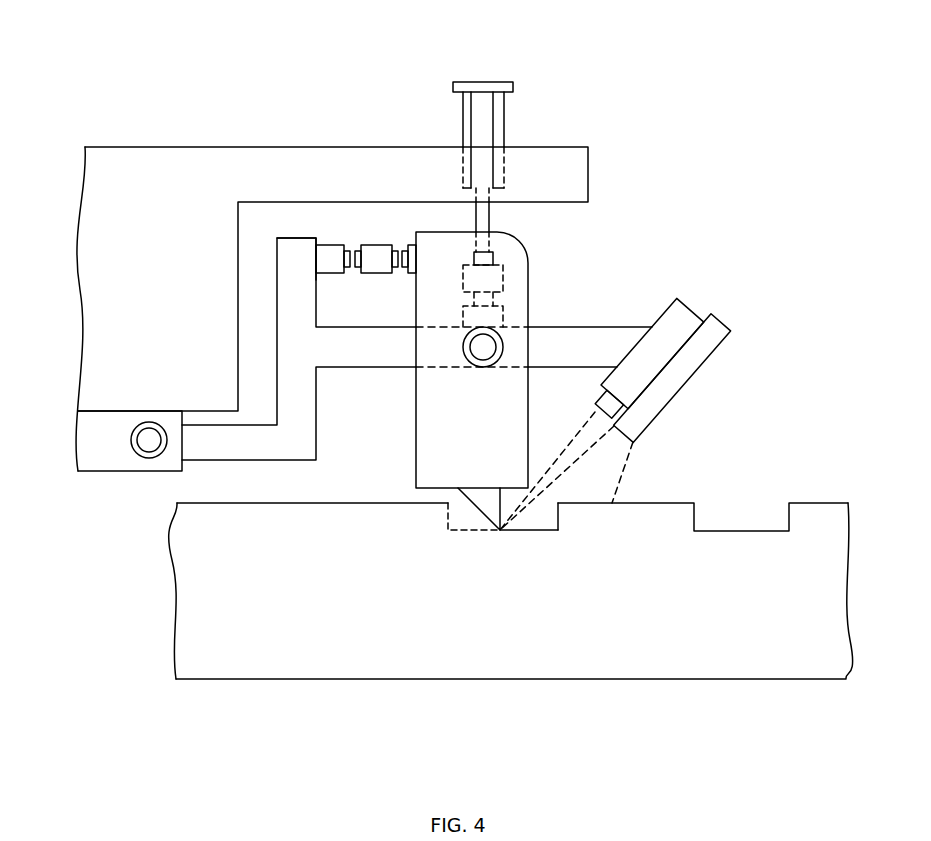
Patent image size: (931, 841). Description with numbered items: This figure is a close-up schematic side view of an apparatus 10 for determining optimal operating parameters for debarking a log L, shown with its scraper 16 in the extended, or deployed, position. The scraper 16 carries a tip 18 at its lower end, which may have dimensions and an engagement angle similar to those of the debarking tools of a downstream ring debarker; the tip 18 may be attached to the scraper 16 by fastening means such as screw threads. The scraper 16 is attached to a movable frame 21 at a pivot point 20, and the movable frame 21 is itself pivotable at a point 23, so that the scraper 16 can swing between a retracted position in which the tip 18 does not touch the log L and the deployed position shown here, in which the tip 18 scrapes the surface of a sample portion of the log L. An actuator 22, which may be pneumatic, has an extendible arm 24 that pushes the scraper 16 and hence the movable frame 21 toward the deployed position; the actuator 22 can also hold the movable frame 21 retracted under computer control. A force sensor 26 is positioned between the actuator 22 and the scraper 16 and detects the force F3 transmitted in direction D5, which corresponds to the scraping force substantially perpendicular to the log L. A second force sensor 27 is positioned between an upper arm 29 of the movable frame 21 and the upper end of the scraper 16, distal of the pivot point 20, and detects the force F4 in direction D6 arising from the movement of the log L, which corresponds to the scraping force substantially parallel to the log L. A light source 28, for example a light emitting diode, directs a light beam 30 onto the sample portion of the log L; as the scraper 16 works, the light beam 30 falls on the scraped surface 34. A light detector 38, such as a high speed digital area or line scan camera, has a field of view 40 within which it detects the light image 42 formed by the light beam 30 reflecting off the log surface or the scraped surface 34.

The apparatus 10 is at (258, 85).
The scraper 16 is at (528, 307).
The tip 18 is at (483, 518).
The pivot point 20 is at (463, 350).
The movable frame 21 is at (265, 460).
The actuator 22 is at (506, 117).
The pivot point 23 is at (132, 432).
The extendible arm 24 is at (492, 212).
The force sensor 26 is at (504, 280).
The force sensor 27 is at (371, 233).
The light source 28 is at (693, 302).
The upper arm 29 is at (300, 238).
The light beam 30 is at (558, 505).
The scraped surface 34 is at (537, 530).
The light detector 38 is at (720, 352).
The field of view 40 is at (645, 470).
The light image 42 is at (500, 530).
The log L is at (242, 680).
The force F3 is at (483, 69).
The force F4 is at (328, 297).
The direction D5 is at (483, 42).
The direction D6 is at (368, 297).